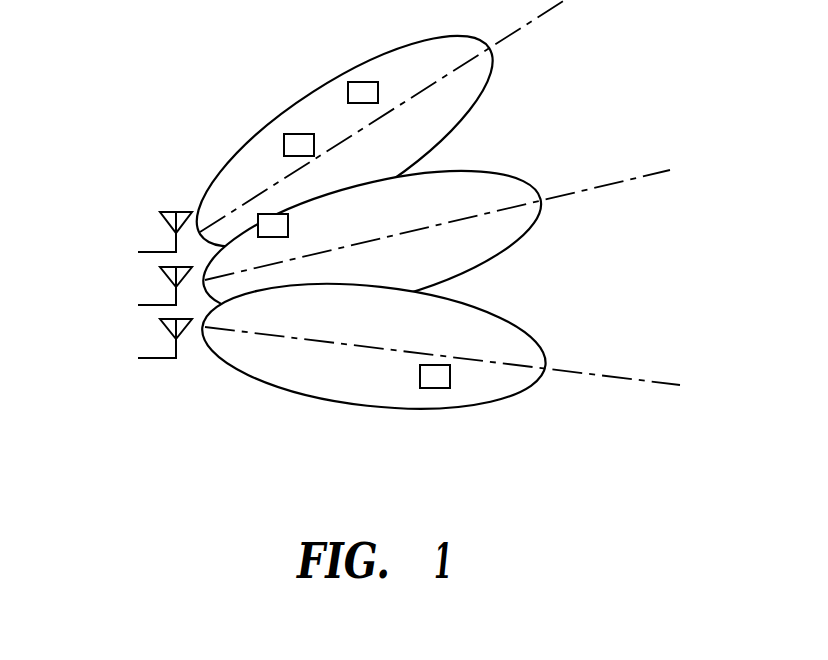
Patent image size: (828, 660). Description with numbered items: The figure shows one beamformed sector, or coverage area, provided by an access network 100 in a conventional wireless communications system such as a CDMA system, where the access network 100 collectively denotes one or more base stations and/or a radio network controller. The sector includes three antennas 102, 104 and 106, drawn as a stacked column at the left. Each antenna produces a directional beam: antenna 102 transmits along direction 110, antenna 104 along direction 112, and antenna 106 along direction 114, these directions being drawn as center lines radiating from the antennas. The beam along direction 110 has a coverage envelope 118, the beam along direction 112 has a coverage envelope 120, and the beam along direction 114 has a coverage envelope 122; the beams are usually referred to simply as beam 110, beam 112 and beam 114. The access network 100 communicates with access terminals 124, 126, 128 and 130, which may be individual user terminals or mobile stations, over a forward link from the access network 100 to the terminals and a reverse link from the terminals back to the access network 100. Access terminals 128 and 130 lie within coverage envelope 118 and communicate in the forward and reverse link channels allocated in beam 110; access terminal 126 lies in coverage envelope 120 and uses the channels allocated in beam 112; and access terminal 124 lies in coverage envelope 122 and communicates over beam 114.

The access network 100 is at (353, 470).
The antenna 102 is at (138, 252).
The antenna 104 is at (138, 305).
The antenna 106 is at (138, 358).
The direction 110 is at (566, 2).
The direction 112 is at (632, 180).
The direction 114 is at (650, 380).
The coverage envelope 118 is at (492, 70).
The coverage envelope 120 is at (503, 173).
The coverage envelope 122 is at (517, 327).
The access terminal 124 is at (433, 388).
The access terminal 126 is at (288, 224).
The access terminal 128 is at (358, 82).
The access terminal 130 is at (284, 145).